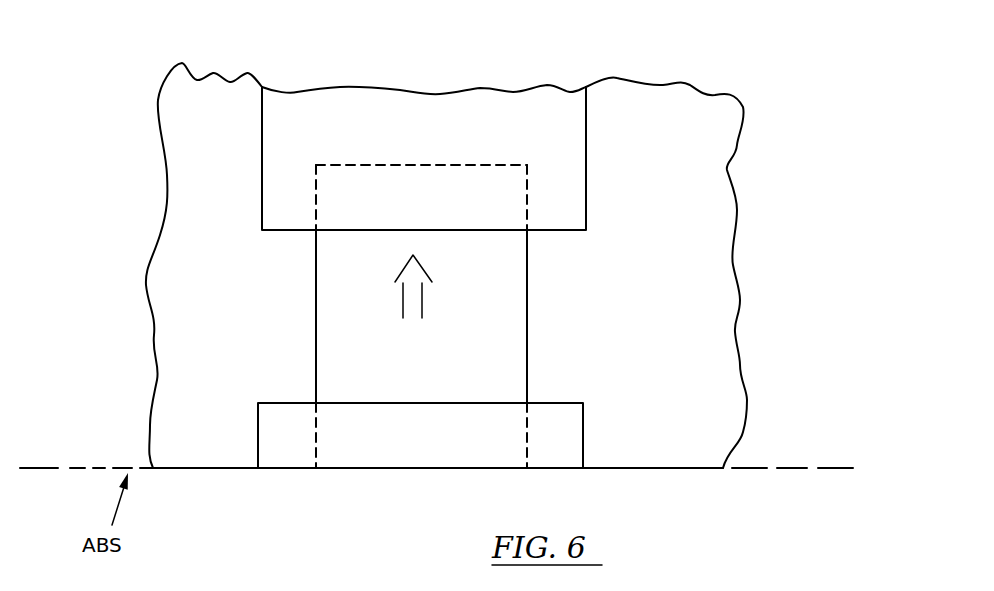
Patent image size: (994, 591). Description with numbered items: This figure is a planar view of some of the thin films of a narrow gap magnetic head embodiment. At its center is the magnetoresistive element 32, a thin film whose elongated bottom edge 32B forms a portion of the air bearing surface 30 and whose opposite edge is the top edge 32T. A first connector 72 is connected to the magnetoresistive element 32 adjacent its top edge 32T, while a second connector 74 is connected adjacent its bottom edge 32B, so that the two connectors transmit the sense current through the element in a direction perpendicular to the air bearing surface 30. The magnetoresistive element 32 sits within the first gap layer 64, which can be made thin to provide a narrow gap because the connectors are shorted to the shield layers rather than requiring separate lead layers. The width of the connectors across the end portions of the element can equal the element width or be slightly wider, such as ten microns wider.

The first connector 72 is at (432, 102).
The second connector 74 is at (355, 457).
The magnetoresistive element 32 is at (540, 356).
The top edge 32T is at (450, 165).
The bottom edge 32B is at (425, 468).
The first gap layer 64 is at (172, 325).
The air bearing surface 30 is at (800, 470).